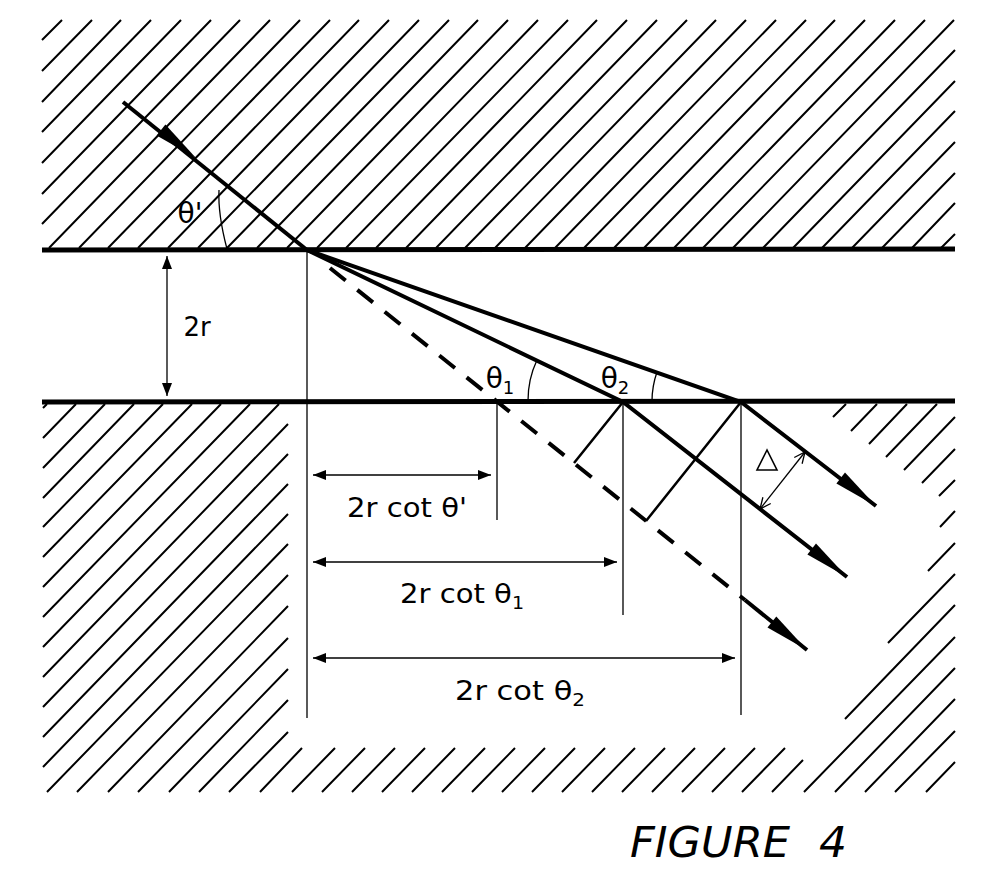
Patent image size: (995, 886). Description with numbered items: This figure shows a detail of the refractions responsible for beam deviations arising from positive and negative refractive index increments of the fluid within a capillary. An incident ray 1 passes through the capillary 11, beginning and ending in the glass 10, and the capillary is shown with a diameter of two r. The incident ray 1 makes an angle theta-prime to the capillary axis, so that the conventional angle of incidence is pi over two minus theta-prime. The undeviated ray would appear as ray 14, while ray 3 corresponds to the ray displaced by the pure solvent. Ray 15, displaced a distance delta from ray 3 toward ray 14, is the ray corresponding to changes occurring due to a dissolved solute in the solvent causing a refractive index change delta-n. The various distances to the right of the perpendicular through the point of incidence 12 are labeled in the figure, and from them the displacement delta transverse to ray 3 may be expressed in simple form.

The ray 1 is at (191, 153).
The glass 10 is at (498, 406).
The capillary 11 is at (498, 325).
The point of incidence 12 is at (318, 456).
The ray 3 is at (611, 396).
The ray 15 is at (598, 434).
The ray 14 is at (590, 479).